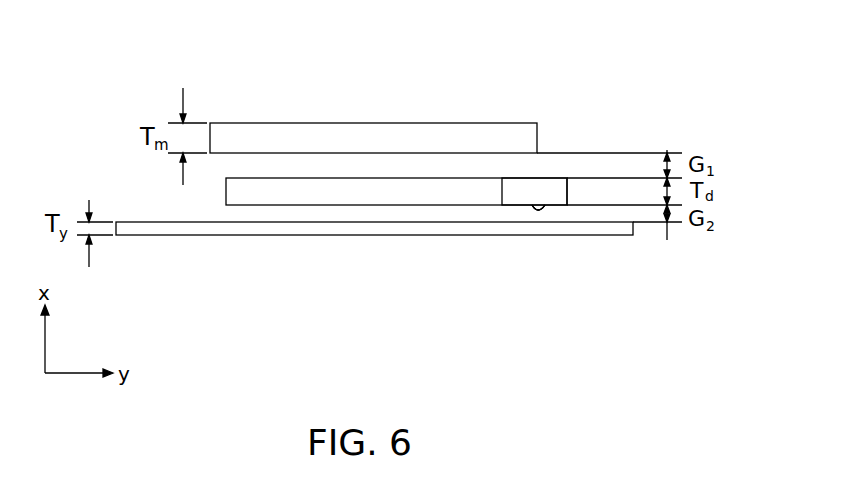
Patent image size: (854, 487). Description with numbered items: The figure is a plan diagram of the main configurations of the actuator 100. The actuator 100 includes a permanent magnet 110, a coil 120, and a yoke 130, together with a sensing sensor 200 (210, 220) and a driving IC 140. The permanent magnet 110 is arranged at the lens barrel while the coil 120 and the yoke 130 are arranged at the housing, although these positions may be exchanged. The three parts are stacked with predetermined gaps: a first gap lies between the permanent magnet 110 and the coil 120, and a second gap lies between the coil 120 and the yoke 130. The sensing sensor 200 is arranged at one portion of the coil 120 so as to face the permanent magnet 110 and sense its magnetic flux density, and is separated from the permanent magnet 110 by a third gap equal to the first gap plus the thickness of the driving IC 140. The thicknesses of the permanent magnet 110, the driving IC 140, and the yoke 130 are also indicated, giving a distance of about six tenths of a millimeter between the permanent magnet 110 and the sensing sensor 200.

The actuator 100 is at (566, 77).
The permanent magnet 110 is at (296, 123).
The coil 120 is at (293, 198).
The yoke 130 is at (201, 233).
The driving IC 140 is at (500, 192).
The sensing sensor 200 is at (538, 211).
The sensing sensor 210 is at (538, 207).
The sensing sensor 220 is at (538, 207).